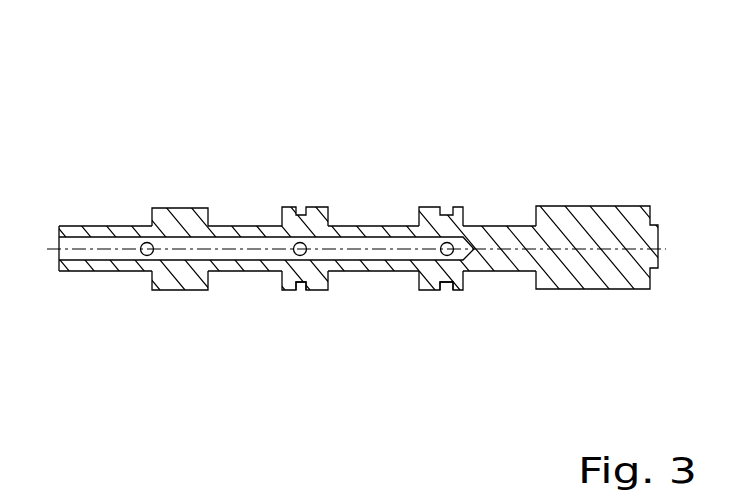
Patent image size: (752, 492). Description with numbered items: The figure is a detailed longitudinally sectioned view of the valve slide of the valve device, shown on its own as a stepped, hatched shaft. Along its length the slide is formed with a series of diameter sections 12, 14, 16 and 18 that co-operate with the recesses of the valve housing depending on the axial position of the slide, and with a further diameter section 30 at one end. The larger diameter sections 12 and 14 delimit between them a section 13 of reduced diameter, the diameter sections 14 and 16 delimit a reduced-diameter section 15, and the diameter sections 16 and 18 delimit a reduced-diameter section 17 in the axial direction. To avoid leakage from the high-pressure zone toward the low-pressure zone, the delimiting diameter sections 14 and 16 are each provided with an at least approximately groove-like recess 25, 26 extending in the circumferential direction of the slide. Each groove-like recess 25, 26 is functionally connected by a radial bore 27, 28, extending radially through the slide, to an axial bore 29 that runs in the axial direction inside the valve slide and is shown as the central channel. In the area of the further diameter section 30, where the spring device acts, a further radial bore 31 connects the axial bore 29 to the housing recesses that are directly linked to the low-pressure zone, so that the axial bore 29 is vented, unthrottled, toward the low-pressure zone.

The diameter section 12 is at (169, 208).
The section with reduced diameter 13 is at (244, 226).
The diameter section 14 is at (317, 207).
The reduced-diameter section 15 is at (384, 226).
The diameter section 16 is at (431, 207).
The reduced-diameter section 17 is at (513, 226).
The diameter section 18 is at (606, 206).
The groove-like recess 25 is at (300, 283).
The groove-like recess 26 is at (445, 280).
The radial bore 27 is at (298, 256).
The radial bore 28 is at (445, 255).
The axial bore 29 is at (85, 243).
The further diameter section 30 is at (80, 271).
The further radial bore 31 is at (147, 255).